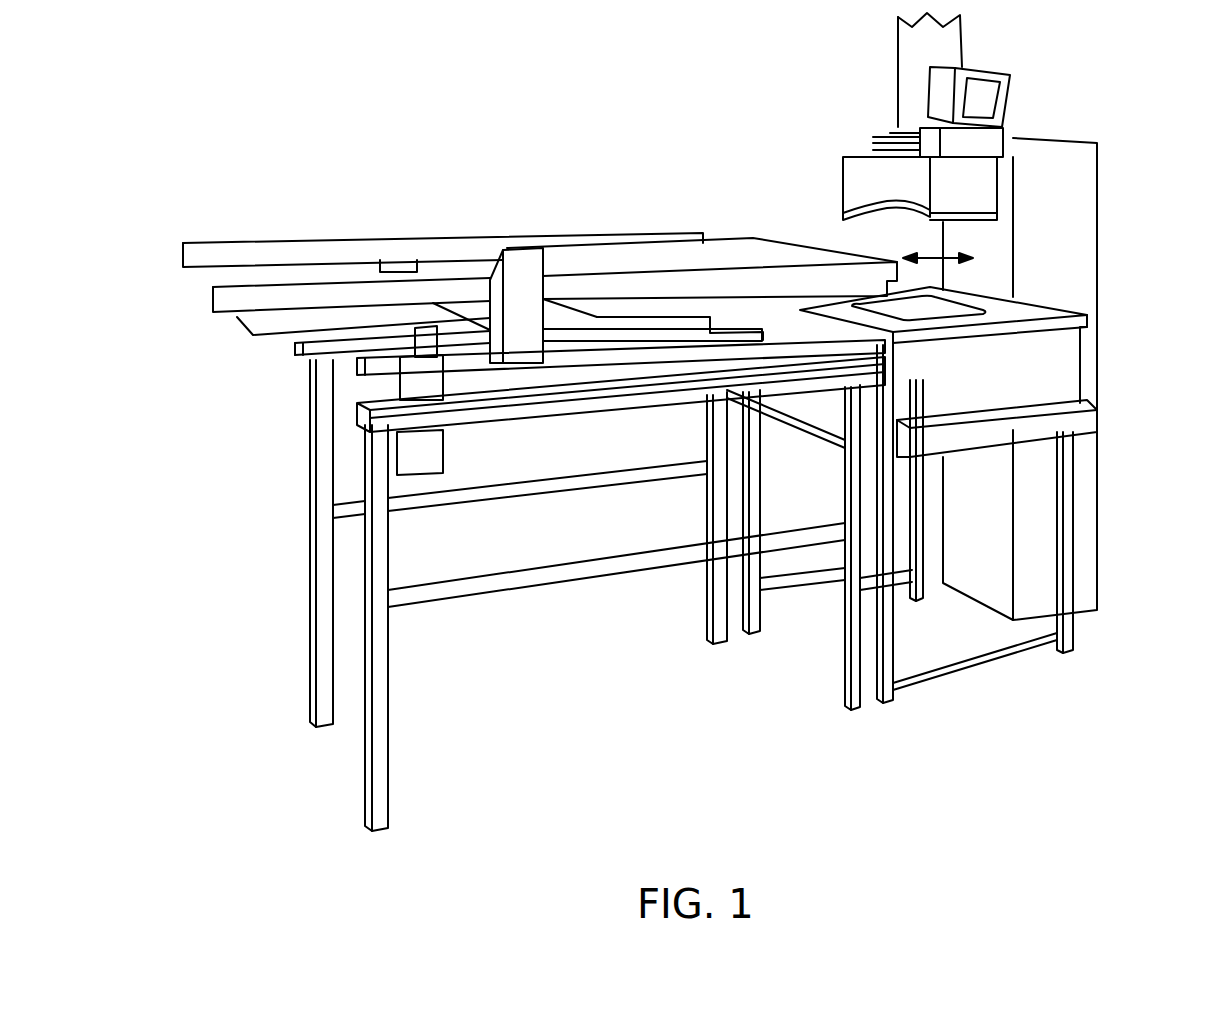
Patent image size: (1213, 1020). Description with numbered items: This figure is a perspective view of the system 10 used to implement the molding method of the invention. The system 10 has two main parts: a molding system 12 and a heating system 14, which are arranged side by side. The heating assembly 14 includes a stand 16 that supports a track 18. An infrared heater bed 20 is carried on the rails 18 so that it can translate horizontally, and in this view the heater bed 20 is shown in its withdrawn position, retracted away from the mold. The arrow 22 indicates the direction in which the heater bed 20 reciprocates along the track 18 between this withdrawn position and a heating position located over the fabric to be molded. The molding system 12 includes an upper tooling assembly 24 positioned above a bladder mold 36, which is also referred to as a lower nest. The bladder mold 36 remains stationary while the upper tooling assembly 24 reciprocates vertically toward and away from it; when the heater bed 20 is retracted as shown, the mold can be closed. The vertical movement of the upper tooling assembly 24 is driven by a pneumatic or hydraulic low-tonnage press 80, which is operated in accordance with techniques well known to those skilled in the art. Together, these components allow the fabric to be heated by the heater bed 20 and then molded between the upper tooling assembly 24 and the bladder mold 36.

The system 10 is at (500, 108).
The molding system 12 is at (877, 720).
The heating system 14 is at (357, 855).
The stand 16 is at (299, 680).
The track 18 is at (607, 367).
The infrared heater bed 20 is at (552, 252).
The arrow 22 is at (937, 257).
The upper tooling assembly 24 is at (832, 184).
The bladder mold 36 is at (1056, 374).
The low-tonnage press 80 is at (962, 50).